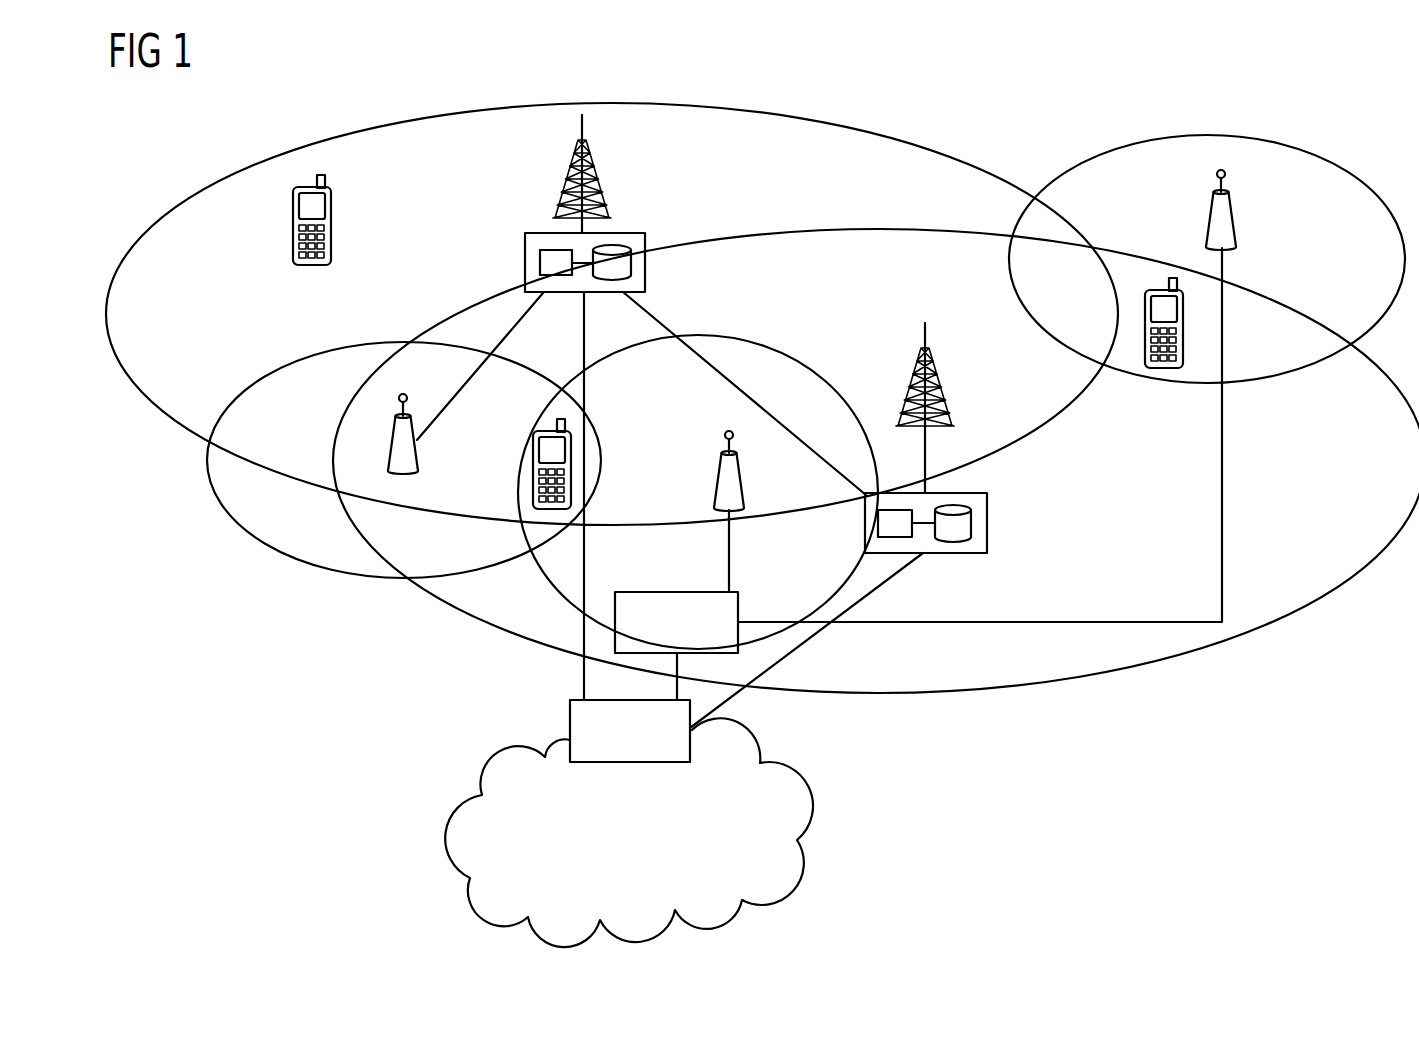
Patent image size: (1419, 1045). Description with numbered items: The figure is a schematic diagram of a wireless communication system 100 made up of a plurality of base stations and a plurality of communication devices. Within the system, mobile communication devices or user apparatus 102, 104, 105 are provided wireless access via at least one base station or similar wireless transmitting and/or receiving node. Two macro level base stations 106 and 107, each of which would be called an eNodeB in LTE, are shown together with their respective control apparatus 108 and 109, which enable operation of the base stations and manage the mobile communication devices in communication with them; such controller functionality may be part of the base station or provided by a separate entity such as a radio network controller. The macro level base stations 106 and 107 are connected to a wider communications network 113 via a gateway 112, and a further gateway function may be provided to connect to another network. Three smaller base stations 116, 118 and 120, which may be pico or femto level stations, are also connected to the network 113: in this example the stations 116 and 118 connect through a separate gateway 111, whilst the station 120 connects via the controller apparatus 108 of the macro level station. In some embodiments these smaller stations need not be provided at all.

The wireless communication system 100 is at (196, 166).
The mobile communication device 102 is at (291, 223).
The mobile communication device 104 is at (531, 470).
The mobile communication device 105 is at (1165, 372).
The macro level base station 106 is at (568, 172).
The macro level base station 107 is at (943, 378).
The control apparatus 108 is at (523, 252).
The control apparatus 109 is at (989, 522).
The gateway 111 is at (738, 605).
The gateway 112 is at (570, 723).
The wider communications network 113 is at (438, 837).
The smaller base station 116 is at (1237, 223).
The smaller base station 118 is at (743, 486).
The smaller base station 120 is at (420, 457).